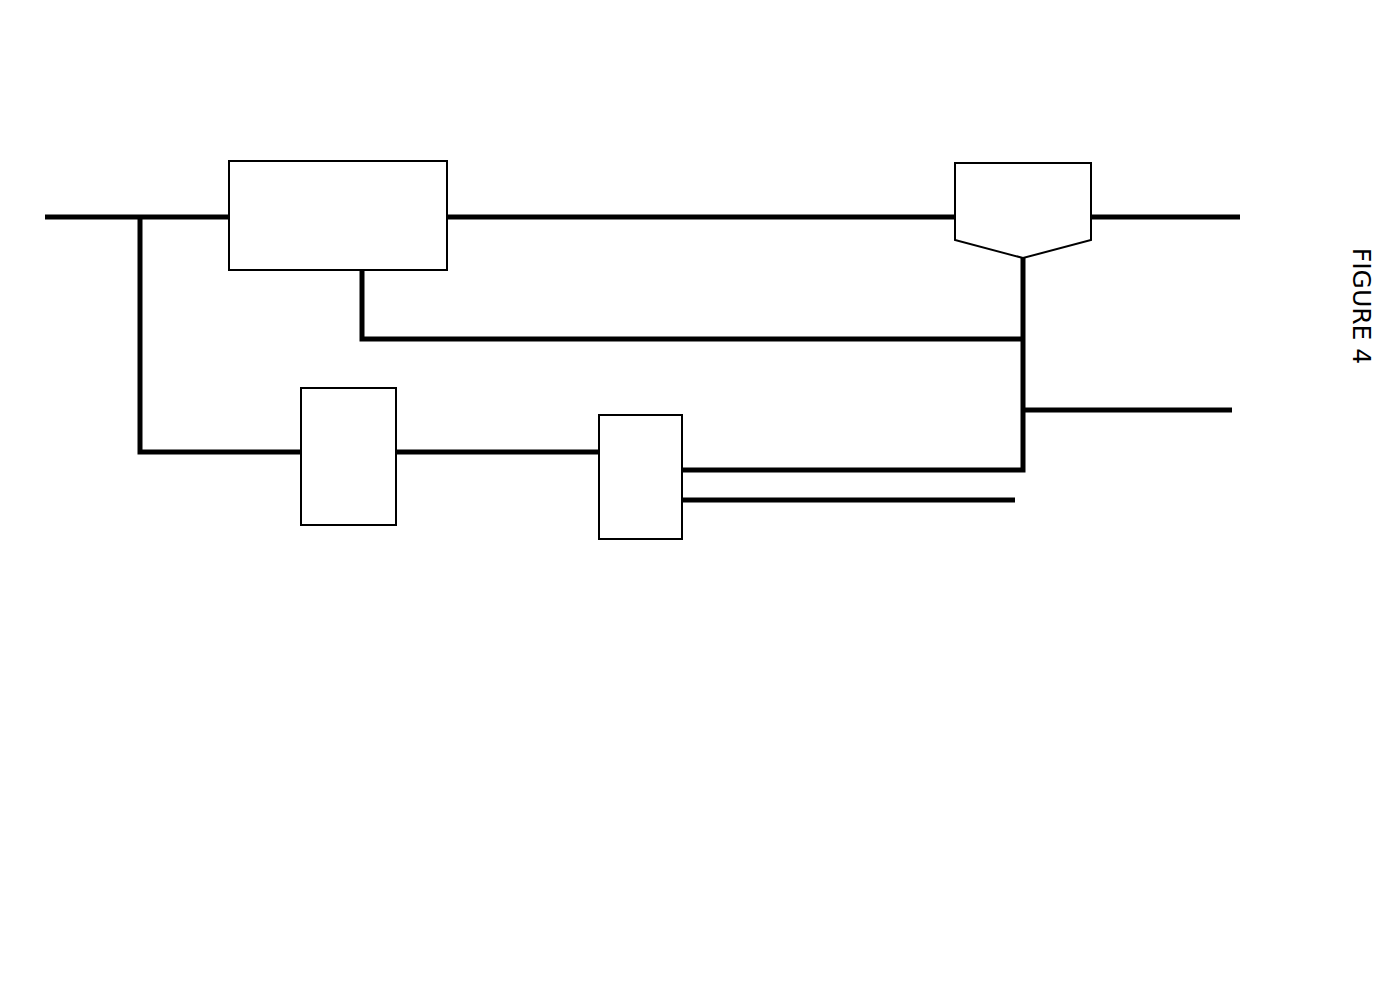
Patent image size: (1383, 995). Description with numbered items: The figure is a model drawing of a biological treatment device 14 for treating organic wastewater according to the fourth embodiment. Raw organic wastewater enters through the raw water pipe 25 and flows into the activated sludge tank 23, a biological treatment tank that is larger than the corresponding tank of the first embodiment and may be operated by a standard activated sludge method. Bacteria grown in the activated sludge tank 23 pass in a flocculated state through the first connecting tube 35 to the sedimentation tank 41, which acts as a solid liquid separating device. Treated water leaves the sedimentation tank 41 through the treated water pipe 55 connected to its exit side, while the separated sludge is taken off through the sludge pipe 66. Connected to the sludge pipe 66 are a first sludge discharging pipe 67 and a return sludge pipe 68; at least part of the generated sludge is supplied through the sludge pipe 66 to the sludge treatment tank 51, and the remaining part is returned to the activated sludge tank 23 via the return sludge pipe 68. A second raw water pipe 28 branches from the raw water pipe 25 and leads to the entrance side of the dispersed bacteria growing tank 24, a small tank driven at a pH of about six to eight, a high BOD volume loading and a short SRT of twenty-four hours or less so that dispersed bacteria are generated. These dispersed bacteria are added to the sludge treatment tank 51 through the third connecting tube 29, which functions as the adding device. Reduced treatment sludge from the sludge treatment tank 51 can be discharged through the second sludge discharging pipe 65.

The treatment device 14 is at (663, 781).
The activated sludge tank 23 is at (342, 160).
The dispersed bacteria growing tank 24 is at (345, 527).
The raw water pipe 25 is at (90, 220).
The second raw water pipe 28 is at (192, 455).
The third connecting tube 29 is at (503, 450).
The first connecting tube 35 is at (512, 220).
The sedimentation tank 41 is at (1015, 162).
The sludge treatment tank 51 is at (640, 541).
The treated water pipe 55 is at (1190, 220).
The second sludge discharging pipe 65 is at (832, 503).
The sludge pipe 66 is at (1018, 392).
The first sludge discharging pipe 67 is at (1190, 408).
The return sludge pipe 68 is at (833, 342).